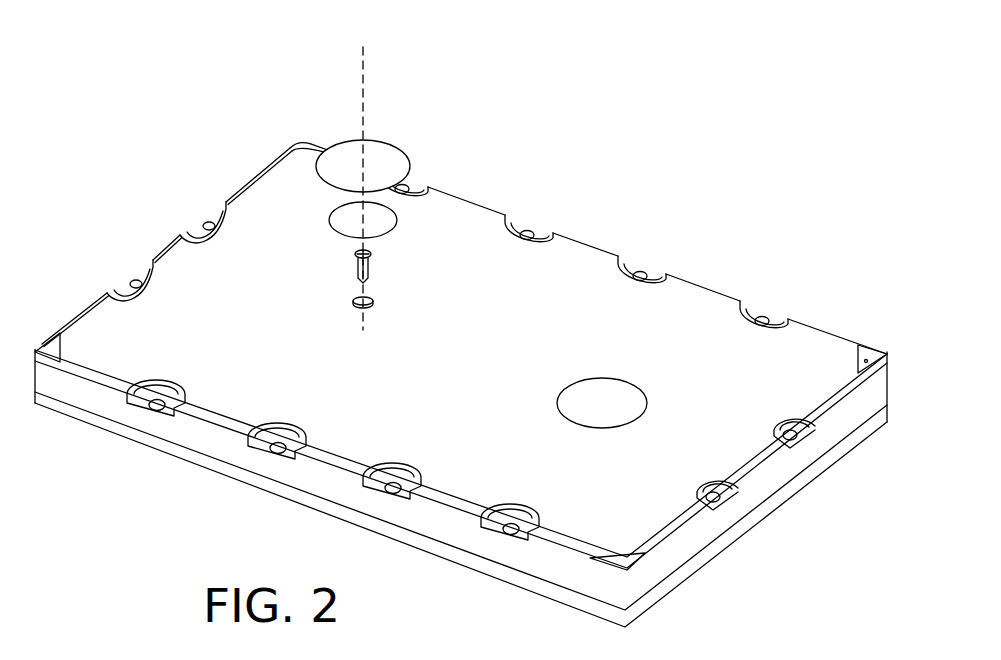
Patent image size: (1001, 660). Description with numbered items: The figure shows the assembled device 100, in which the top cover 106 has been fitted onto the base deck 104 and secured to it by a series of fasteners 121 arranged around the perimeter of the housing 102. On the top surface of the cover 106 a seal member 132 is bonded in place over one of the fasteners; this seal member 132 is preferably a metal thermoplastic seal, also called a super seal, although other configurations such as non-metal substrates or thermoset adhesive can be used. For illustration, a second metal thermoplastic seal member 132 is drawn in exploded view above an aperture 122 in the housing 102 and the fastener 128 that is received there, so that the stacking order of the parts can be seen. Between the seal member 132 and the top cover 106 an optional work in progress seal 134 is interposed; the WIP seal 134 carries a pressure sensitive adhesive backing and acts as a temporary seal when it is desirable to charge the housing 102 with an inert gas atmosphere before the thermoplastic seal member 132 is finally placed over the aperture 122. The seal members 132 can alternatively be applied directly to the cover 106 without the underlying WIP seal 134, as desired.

The device 100 is at (190, 111).
The housing 102 is at (157, 247).
The base deck 104 is at (757, 487).
The top cover 106 is at (683, 327).
The fasteners 121 is at (530, 232).
The aperture 122 is at (373, 302).
The fastener 128 is at (372, 263).
The seal member 132 is at (392, 159).
The work in progress (WIP) seal 134 is at (343, 217).